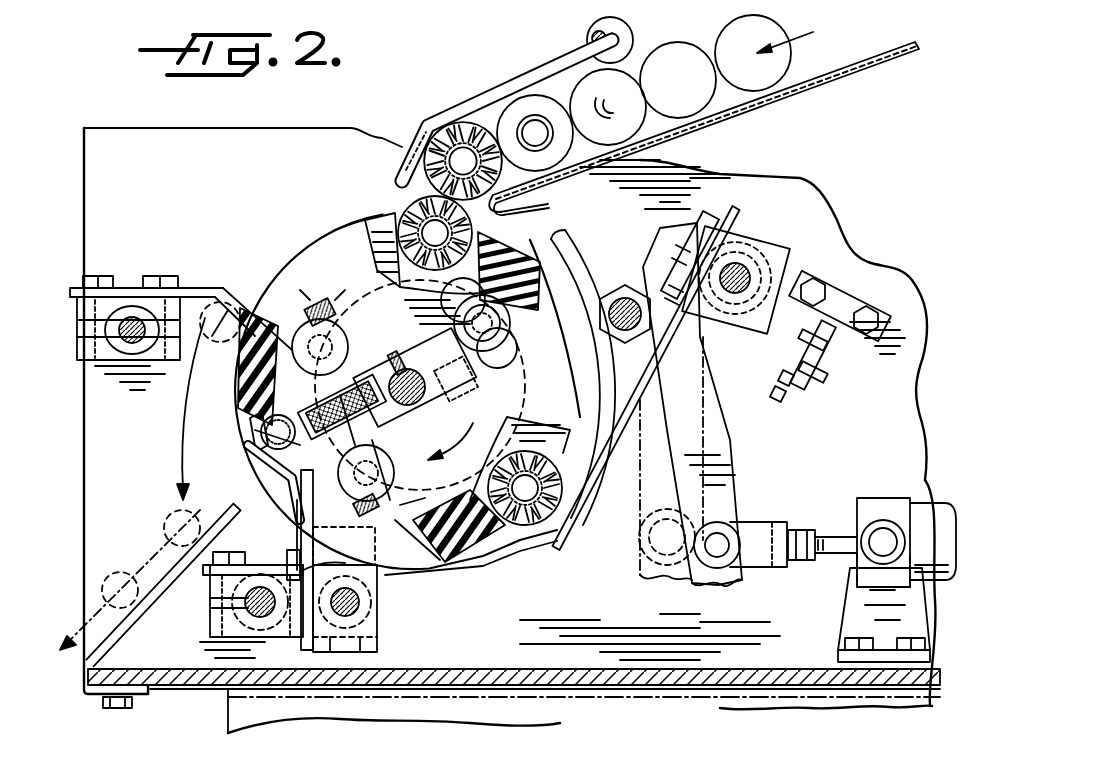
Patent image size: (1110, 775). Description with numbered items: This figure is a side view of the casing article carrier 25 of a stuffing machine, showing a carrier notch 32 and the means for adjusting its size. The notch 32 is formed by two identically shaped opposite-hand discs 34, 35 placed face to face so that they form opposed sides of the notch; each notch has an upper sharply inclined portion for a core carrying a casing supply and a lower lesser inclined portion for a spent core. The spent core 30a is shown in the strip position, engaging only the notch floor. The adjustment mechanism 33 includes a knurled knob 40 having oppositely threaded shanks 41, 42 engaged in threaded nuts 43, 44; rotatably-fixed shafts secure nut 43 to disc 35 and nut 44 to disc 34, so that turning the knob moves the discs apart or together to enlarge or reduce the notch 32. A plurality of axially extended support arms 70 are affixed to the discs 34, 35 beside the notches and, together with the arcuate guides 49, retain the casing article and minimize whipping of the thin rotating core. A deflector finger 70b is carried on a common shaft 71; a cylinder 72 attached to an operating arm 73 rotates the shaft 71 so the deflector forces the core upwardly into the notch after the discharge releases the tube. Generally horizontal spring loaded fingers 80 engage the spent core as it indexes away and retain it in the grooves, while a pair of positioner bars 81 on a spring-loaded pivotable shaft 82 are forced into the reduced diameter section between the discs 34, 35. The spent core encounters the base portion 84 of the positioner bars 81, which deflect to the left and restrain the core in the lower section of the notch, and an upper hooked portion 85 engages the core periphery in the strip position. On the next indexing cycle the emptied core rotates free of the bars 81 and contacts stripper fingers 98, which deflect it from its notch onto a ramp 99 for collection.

The carrier 25 is at (407, 378).
The carrier notch 32 is at (398, 203).
The disc 34 is at (378, 222).
The disc 35 is at (313, 229).
The threaded shank 42 is at (377, 267).
The threaded nut 44 is at (310, 325).
The knurled knob 40 is at (360, 368).
The adjustment mechanism 33 is at (392, 418).
The threaded nut 43 is at (398, 491).
The threaded shank 41 is at (385, 530).
The stripper fingers 98 is at (218, 263).
The spent core 30a is at (182, 447).
The support arms 70 is at (235, 390).
The deflector finger 70b is at (615, 433).
The arcuate guides 49 is at (572, 250).
The shaft 71 is at (750, 280).
The operating arm 73 is at (718, 417).
The cylinder 72 is at (930, 477).
The upper hooked portion 85 is at (270, 470).
The base portion 84 is at (318, 532).
The positioner bars 81 is at (305, 628).
The pivotable shaft 82 is at (365, 598).
The spring loaded fingers 80 is at (400, 575).
The ramp 99 is at (160, 588).